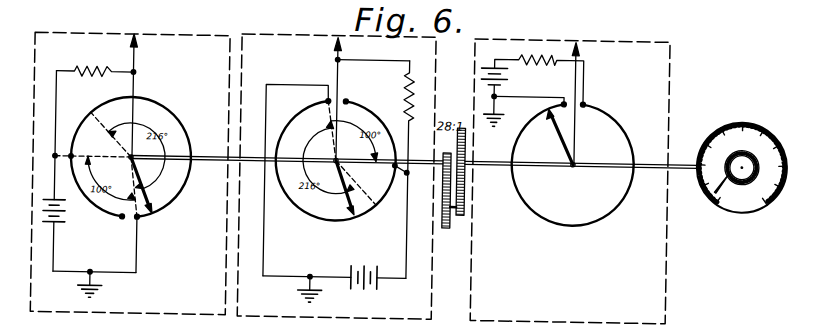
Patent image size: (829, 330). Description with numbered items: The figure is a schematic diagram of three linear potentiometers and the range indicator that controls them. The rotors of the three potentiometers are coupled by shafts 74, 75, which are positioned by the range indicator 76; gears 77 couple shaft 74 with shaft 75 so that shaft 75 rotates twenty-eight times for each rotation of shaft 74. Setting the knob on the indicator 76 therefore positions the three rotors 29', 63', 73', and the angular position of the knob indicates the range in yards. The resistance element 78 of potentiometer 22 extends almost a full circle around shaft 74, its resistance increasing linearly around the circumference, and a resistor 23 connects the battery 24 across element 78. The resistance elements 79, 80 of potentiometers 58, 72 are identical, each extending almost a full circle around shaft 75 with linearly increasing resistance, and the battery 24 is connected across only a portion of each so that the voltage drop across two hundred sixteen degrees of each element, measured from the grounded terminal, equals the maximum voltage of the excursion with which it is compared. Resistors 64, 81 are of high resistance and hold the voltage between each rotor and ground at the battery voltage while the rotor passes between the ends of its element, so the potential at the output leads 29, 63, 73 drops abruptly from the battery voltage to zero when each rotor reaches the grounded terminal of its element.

The potentiometer 72 is at (62, 30).
The resistor 81 is at (91, 66).
The resistance element 80 is at (78, 123).
The output lead 73 is at (163, 96).
The rotor 73' is at (178, 187).
The shaft 75 is at (205, 153).
The battery 24 is at (68, 213).
The potentiometer 58 is at (282, 31).
The output lead 63 is at (314, 99).
The rotor 63' is at (340, 209).
The resistor 64 is at (400, 93).
The resistance element 79 is at (312, 101).
The gears 77 is at (459, 220).
The potentiometer 22 is at (553, 31).
The resistor 23 is at (538, 55).
The output lead 29 is at (601, 104).
The rotor 29' is at (551, 137).
The resistance element 78 is at (619, 111).
The shaft 74 is at (678, 154).
The range indicator 76 is at (749, 113).